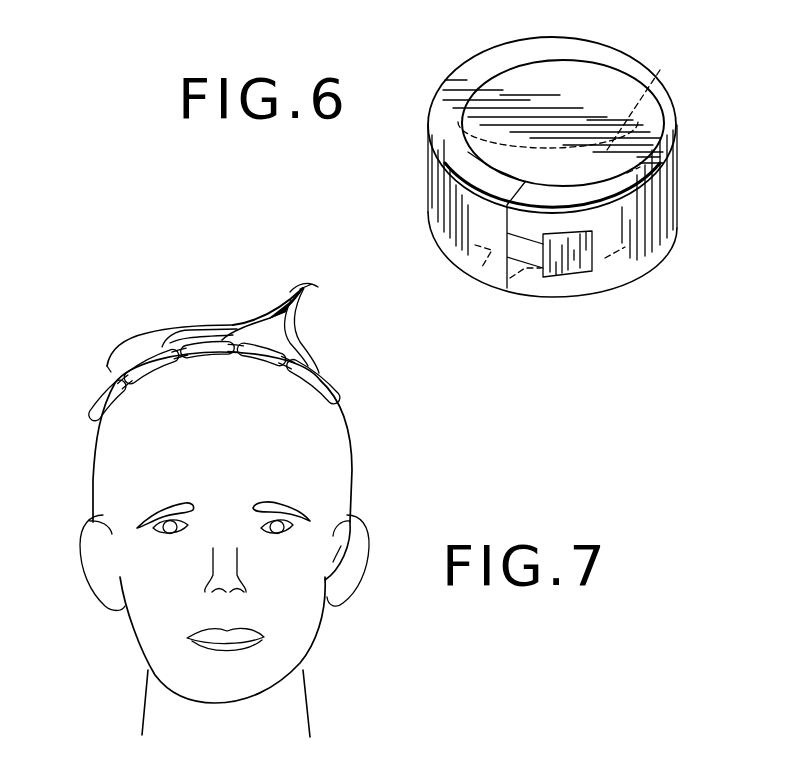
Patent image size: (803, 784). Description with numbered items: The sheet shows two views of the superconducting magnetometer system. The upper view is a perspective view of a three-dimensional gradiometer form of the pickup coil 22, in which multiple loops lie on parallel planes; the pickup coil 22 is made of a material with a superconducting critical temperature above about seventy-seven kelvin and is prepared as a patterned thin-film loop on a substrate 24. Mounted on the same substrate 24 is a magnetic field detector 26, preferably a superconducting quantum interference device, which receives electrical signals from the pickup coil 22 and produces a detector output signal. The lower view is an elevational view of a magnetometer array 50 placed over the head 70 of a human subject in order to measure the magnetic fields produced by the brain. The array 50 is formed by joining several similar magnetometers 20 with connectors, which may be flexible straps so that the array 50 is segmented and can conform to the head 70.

In FIG. 6, the pickup coil 22 is at (612, 70).
In FIG. 6, the substrate 24 is at (668, 125).
In FIG. 6, the magnetic field detector 26 is at (586, 253).
In FIG. 7, the magnetometer 20 is at (104, 396).
In FIG. 7, the array 50 is at (170, 324).
In FIG. 7, the head 70 is at (310, 633).